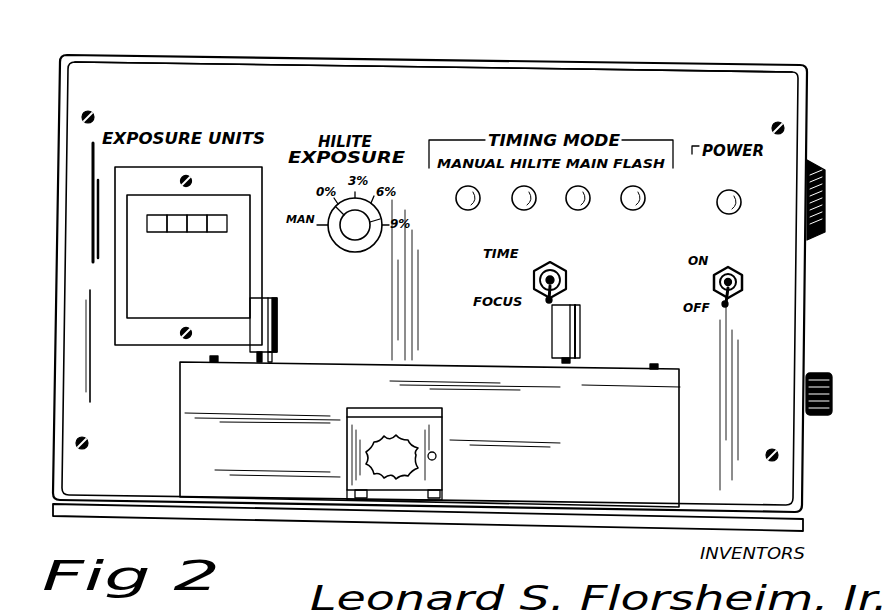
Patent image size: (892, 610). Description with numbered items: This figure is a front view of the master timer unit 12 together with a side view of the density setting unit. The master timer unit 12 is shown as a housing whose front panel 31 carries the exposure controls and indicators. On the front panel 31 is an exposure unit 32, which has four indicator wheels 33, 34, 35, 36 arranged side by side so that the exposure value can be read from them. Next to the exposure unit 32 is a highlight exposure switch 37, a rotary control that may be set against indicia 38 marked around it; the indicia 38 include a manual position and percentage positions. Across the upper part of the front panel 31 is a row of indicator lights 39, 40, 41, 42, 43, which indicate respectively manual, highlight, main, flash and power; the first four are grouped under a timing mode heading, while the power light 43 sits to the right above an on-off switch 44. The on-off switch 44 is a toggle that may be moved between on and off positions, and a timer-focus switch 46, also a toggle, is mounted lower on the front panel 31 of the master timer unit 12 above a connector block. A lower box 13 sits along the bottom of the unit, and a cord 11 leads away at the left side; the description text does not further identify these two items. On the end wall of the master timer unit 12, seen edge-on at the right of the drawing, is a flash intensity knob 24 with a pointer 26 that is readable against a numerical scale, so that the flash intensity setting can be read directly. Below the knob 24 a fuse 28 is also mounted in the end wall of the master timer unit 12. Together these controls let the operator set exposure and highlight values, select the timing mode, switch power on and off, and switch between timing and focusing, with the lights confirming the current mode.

The electrical cord 11 is at (40, 185).
The master timer unit 12 is at (678, 50).
The lower box / base unit 13 is at (612, 382).
The flash intensity knob 24 is at (812, 165).
The pointer 26 is at (808, 240).
The fuse 28 is at (818, 372).
The front panel 31 is at (505, 77).
The exposure unit 32 is at (133, 212).
The indicator wheel 33 is at (217, 232).
The indicator wheel 34 is at (196, 232).
The indicator wheel 35 is at (176, 232).
The indicator wheel 36 is at (155, 232).
The highlight exposure switch 37 is at (350, 233).
The indicia 38 is at (392, 232).
The indicator light 39 is at (460, 207).
The indicator light 40 is at (518, 208).
The indicator light 41 is at (578, 210).
The indicator light 42 is at (634, 210).
The indicator light 43 is at (717, 206).
The on-off switch 44 is at (784, 260).
The timer-focus switch 46 is at (567, 274).